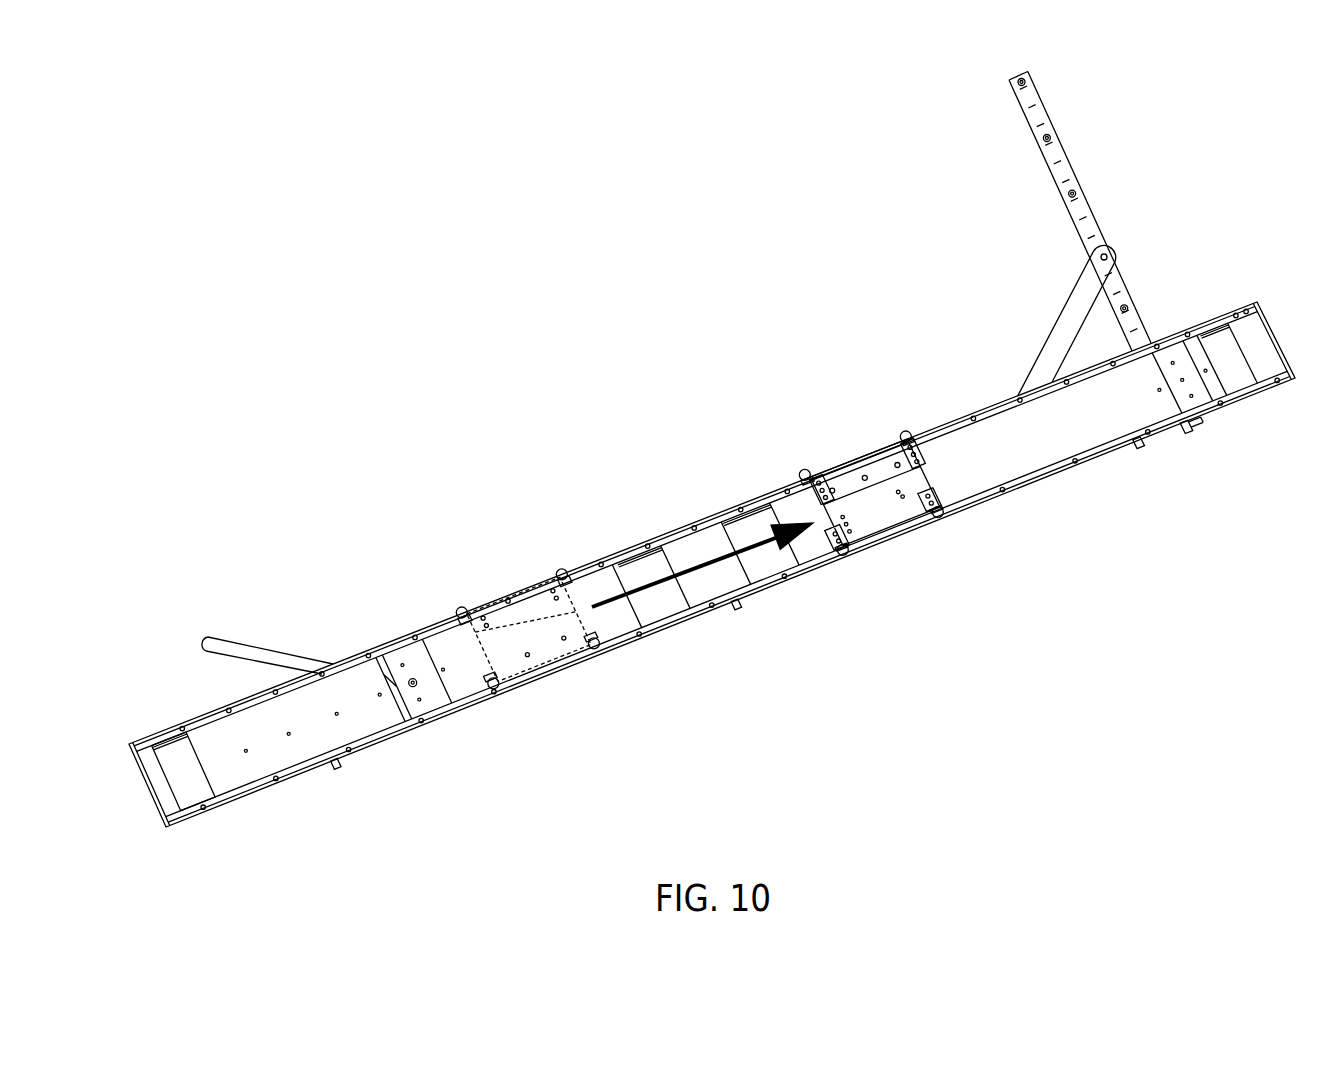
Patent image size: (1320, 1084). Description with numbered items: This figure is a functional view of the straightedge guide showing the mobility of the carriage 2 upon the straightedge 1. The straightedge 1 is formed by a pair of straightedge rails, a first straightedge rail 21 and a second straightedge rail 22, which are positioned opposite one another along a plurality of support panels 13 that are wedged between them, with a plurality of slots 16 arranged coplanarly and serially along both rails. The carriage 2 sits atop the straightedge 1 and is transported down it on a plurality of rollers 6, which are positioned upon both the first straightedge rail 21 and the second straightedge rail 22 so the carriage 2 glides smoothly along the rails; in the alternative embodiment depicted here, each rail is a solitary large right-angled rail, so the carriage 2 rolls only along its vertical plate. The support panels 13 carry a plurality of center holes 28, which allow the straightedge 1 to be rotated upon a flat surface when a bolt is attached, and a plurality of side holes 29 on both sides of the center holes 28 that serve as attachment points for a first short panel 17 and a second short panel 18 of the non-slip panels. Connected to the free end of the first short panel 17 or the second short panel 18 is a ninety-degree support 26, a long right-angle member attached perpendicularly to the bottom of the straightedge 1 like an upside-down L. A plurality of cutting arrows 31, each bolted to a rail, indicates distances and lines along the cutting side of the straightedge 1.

The straightedge 1 is at (322, 648).
The carriage 2 is at (848, 448).
The plurality of rollers 6 is at (940, 515).
The plurality of support panels 13 is at (1162, 347).
The plurality of slots 16 is at (768, 573).
The first short panel 17 is at (1068, 302).
The second short panel 18 is at (253, 647).
The first straightedge rail 21 is at (373, 648).
The second straightedge rail 22 is at (390, 733).
The 90-degree support 26 is at (1089, 206).
The plurality of center holes 28 is at (1068, 423).
The plurality of side holes 29 is at (697, 550).
The plurality of cutting arrows 31 is at (337, 763).